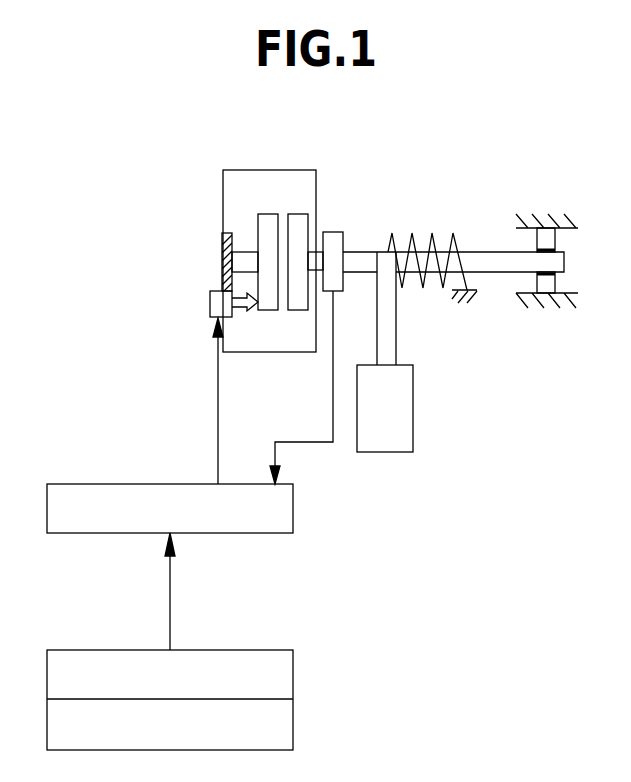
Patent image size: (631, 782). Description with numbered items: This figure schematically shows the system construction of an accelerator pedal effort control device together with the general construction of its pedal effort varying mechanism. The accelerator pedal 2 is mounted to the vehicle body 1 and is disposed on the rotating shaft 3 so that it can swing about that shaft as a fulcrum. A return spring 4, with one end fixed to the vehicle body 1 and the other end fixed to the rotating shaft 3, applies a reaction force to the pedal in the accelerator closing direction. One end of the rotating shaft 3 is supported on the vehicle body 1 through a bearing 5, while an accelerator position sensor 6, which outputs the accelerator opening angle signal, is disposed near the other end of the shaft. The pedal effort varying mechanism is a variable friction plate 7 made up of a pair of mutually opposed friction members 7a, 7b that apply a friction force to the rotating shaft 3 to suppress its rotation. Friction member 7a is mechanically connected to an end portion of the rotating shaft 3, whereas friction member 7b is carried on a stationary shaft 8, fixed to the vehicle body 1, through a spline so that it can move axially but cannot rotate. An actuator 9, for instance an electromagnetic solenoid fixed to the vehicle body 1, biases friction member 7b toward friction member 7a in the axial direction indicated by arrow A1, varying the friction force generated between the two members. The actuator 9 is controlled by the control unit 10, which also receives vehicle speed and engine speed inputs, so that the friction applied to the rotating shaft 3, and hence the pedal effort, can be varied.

The vehicle body 1 is at (225, 259).
The accelerator pedal 2 is at (398, 350).
The rotating shaft 3 is at (485, 259).
The return spring 4 is at (413, 236).
The bearing 5 is at (550, 281).
The accelerator position sensor 6 is at (332, 238).
The variable friction plate 7 is at (292, 353).
The friction member 7a is at (295, 213).
The friction member 7b is at (267, 213).
The stationary shaft 8 is at (248, 256).
The actuator 9 is at (210, 302).
The control unit 10 is at (293, 510).
The arrow A1 is at (240, 310).